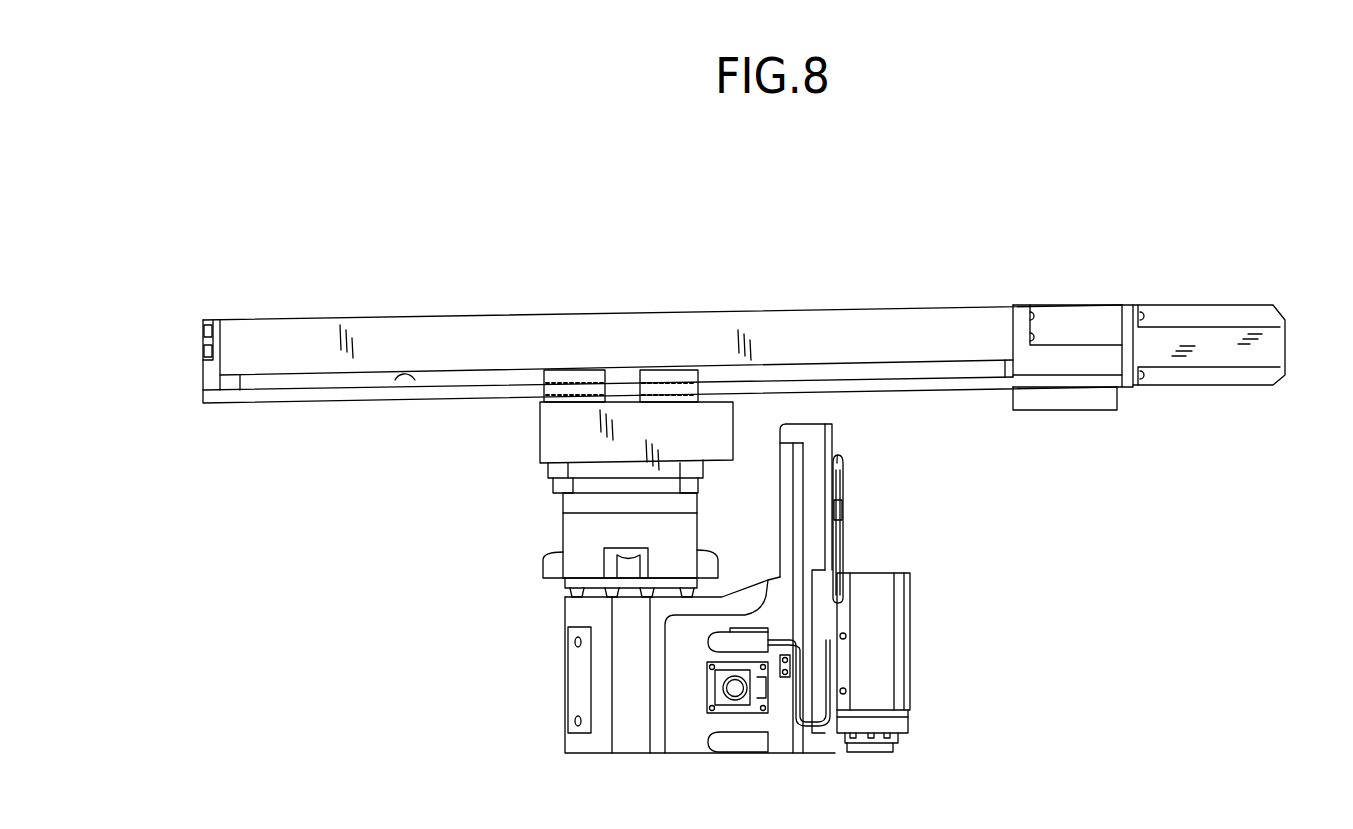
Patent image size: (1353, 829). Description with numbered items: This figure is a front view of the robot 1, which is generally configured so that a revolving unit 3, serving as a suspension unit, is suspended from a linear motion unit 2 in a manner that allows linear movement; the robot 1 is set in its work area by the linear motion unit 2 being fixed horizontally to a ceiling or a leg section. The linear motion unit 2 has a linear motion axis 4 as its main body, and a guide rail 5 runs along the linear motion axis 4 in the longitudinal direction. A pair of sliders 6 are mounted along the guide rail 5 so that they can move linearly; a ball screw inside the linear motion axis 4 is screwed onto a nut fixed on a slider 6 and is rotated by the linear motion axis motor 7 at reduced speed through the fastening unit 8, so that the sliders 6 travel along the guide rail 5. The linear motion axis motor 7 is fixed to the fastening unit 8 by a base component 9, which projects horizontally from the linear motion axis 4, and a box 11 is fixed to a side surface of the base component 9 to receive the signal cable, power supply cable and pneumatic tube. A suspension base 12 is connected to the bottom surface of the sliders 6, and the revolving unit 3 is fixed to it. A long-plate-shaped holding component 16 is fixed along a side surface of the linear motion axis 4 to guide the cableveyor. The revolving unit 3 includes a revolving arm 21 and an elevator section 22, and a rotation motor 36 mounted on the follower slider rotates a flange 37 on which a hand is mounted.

The robot 1 is at (772, 230).
The linear motion unit 2 is at (916, 294).
The revolving unit 3 is at (510, 590).
The linear motion axis 4 is at (430, 315).
The guide rail 5 is at (405, 380).
The sliders 6 is at (574, 368).
The linear motion axis motor 7 is at (1206, 305).
The fastening unit 8 is at (1073, 305).
The base component 9 is at (1125, 305).
The box 11 is at (1063, 412).
The suspension base 12 is at (540, 438).
The holding component 16 is at (563, 530).
The revolving arm 21 is at (565, 688).
The elevator section 22 is at (873, 530).
The rotation motor 36 is at (912, 636).
The flange 37 is at (868, 753).